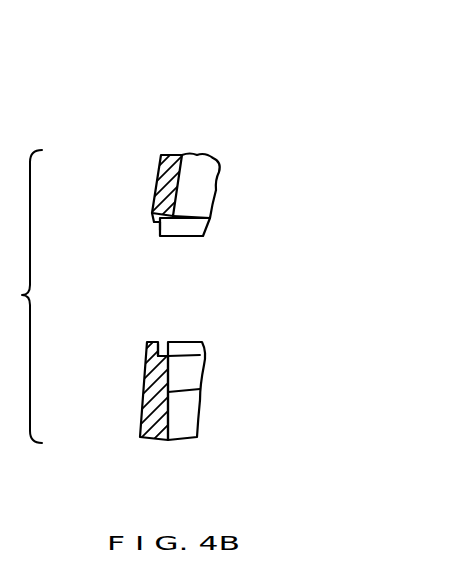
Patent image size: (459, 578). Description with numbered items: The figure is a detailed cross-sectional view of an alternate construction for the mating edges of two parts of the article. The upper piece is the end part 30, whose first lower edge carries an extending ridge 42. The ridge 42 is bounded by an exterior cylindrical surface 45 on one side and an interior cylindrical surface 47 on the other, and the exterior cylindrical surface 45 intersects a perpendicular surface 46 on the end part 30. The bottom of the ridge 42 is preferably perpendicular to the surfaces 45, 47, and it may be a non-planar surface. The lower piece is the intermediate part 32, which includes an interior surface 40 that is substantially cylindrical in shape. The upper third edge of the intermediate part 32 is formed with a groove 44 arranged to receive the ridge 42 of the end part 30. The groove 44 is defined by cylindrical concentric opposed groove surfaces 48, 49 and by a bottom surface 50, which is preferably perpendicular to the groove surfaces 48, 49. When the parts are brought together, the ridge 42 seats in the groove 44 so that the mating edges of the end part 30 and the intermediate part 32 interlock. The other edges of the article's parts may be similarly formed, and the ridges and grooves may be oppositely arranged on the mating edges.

The end part 30 is at (217, 185).
The intermediate part 32 is at (200, 418).
The interior surface 40 is at (200, 389).
The extending ridge 42 is at (126, 240).
The groove 44 is at (142, 327).
The exterior cylindrical surface 45 is at (158, 223).
The perpendicular surface 46 is at (155, 221).
The interior cylindrical surface 47 is at (168, 236).
The groove surface 48 is at (157, 352).
The groove surface 49 is at (200, 355).
The bottom surface 50 is at (144, 372).